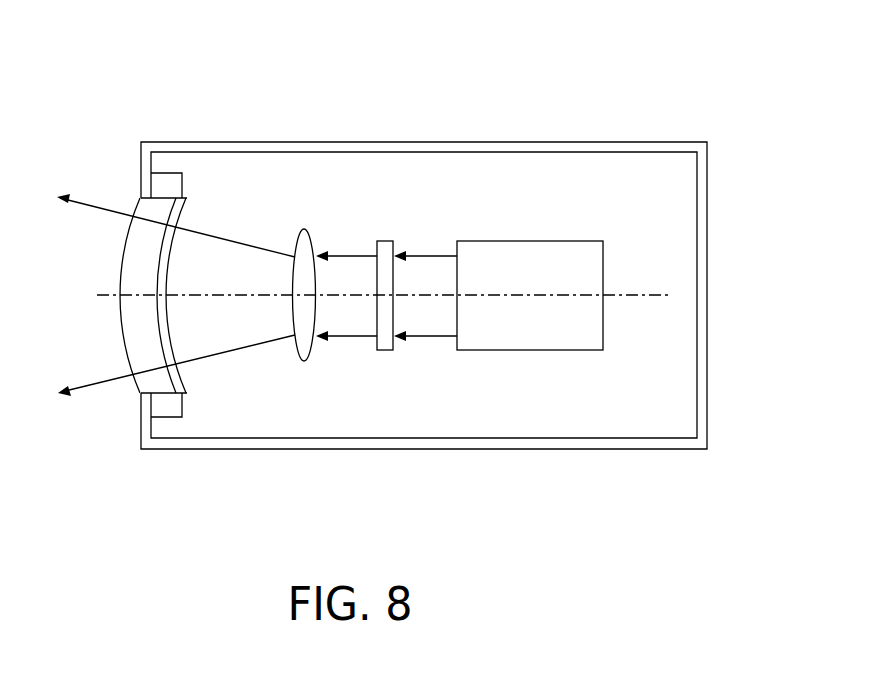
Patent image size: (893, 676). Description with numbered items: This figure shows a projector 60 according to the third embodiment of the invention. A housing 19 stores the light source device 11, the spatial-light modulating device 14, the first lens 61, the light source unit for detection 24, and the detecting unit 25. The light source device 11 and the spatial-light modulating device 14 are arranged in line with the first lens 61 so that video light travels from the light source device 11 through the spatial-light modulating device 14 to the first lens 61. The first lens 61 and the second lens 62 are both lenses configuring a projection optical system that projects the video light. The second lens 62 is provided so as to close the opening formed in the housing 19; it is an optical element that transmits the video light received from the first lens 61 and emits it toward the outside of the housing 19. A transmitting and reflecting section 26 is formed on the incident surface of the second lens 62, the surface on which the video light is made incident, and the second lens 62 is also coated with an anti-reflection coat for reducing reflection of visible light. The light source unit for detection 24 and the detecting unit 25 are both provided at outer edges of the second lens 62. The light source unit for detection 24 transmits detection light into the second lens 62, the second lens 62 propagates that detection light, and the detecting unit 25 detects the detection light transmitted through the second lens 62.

The projector 60 is at (217, 58).
The light source device 11 is at (589, 240).
The spatial-light modulating device 14 is at (385, 245).
The first lens 61 is at (302, 229).
The second lens 62 is at (148, 385).
The housing 19 is at (662, 443).
The light source unit for detection 24 is at (168, 410).
The detecting unit 25 is at (165, 178).
The transmitting and reflecting section 26 is at (187, 395).